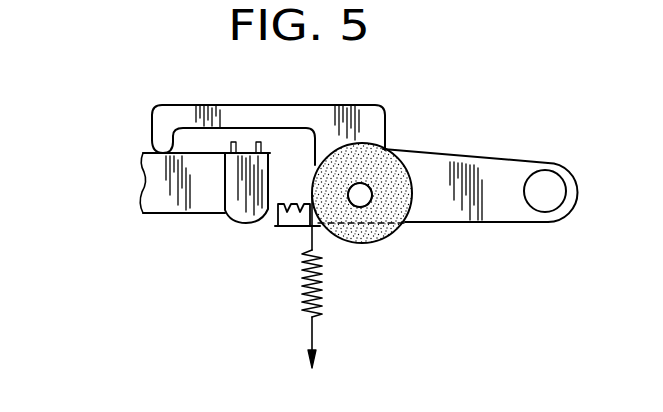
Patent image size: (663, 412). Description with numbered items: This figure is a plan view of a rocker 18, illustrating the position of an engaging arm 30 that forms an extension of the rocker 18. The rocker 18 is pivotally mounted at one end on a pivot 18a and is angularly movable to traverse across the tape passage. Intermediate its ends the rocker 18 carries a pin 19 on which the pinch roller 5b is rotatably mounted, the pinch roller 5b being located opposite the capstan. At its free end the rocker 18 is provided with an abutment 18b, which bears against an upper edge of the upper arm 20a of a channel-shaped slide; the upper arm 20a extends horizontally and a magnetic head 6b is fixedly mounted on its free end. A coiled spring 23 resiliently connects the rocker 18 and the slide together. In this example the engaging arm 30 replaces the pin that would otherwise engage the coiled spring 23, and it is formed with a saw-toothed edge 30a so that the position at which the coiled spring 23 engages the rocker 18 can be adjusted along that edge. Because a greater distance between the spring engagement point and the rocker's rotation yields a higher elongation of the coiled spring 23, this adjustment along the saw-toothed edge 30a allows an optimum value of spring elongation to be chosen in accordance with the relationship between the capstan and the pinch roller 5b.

The pinch roller 5b is at (380, 235).
The magnetic head 6b is at (233, 208).
The rocker 18 is at (493, 166).
The pivot 18a is at (560, 180).
The abutment 18b is at (158, 127).
The pin 19 is at (363, 190).
The upper arm 20a is at (156, 186).
The coiled spring 23 is at (320, 278).
The engaging arm 30 is at (288, 221).
The saw-toothed edge 30a is at (290, 194).